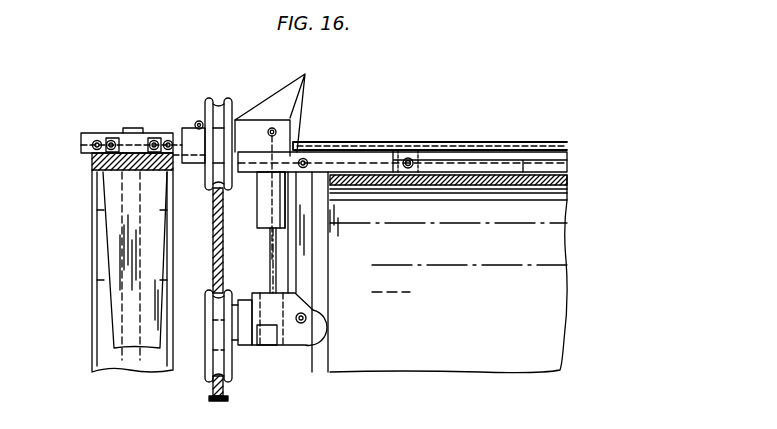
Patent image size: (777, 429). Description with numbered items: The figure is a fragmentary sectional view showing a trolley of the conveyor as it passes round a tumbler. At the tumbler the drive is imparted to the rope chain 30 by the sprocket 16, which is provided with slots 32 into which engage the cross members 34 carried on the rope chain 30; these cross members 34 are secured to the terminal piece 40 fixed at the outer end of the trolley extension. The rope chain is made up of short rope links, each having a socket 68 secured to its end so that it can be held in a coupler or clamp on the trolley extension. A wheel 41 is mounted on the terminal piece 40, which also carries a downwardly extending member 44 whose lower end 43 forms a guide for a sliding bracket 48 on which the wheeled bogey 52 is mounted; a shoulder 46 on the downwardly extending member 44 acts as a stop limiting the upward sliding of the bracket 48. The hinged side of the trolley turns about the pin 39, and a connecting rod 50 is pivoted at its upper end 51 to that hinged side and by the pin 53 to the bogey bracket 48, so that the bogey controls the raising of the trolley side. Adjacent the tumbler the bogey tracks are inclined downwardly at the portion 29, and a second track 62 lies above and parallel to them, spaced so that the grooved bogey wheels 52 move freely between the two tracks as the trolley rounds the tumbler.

The sprocket 16 is at (95, 158).
The inclined portion of bogey track 29 is at (223, 391).
The rope chain 30 is at (97, 139).
The slot 32 is at (103, 172).
The cross member 34 is at (88, 146).
The pin 39 is at (411, 158).
The terminal piece 40 is at (266, 110).
The wheel 41 is at (222, 113).
The lower end 43 is at (263, 262).
The downwardly extending member 44 is at (268, 209).
The shoulder 46 is at (280, 228).
The sliding bracket 48 is at (268, 303).
The connecting rod 50 is at (567, 203).
The upper end of connecting rod 51 is at (318, 147).
The wheeled bogey 52 is at (215, 353).
The pin 53 is at (312, 318).
The second track 62 is at (213, 222).
The socket 68 is at (152, 138).